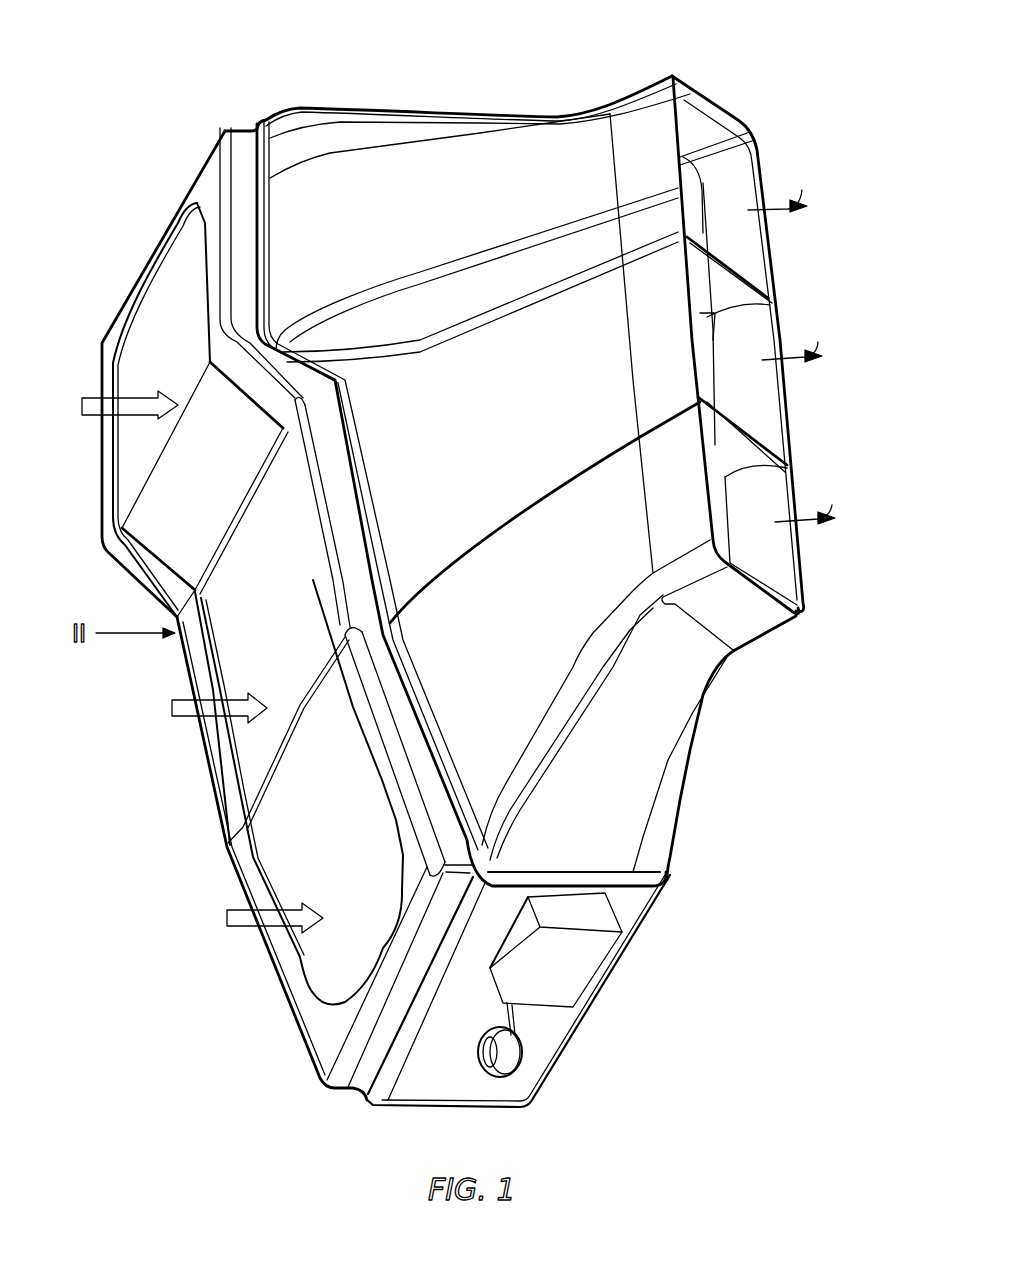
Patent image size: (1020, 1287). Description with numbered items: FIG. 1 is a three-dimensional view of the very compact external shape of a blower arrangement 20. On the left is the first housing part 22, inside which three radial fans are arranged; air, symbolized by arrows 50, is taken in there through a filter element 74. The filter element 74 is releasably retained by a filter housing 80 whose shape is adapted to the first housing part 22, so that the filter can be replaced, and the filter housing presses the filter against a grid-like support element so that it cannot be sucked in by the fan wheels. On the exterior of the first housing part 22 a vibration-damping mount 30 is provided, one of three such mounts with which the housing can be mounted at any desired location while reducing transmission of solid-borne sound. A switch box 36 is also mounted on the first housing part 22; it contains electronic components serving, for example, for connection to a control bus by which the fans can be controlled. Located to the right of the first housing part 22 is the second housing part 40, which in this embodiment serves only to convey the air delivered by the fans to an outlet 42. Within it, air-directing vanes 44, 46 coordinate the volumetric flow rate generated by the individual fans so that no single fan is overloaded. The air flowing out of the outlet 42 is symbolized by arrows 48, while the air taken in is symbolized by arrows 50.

The blower arrangement 20 is at (221, 105).
The first housing part 22 is at (410, 1085).
The vibration-damping mount 30 is at (518, 1052).
The switch box 36 is at (570, 968).
The second housing part 40 is at (768, 328).
The outlet 42 is at (768, 374).
The air-directing vane 44 is at (722, 438).
The air-directing vane 46 is at (707, 273).
The arrows 48 is at (801, 350).
The arrows 50 is at (95, 398).
The filter element 74 is at (250, 770).
The filter housing 80 is at (325, 1025).